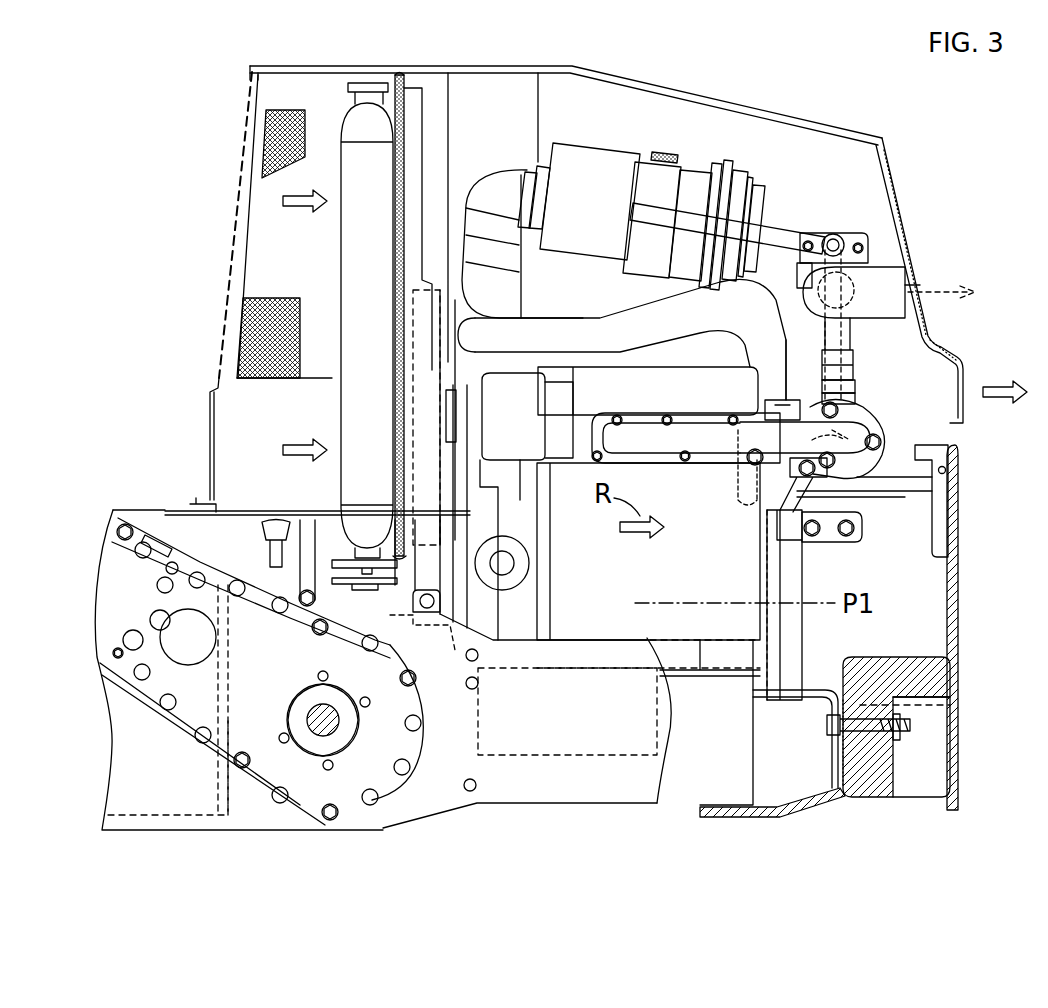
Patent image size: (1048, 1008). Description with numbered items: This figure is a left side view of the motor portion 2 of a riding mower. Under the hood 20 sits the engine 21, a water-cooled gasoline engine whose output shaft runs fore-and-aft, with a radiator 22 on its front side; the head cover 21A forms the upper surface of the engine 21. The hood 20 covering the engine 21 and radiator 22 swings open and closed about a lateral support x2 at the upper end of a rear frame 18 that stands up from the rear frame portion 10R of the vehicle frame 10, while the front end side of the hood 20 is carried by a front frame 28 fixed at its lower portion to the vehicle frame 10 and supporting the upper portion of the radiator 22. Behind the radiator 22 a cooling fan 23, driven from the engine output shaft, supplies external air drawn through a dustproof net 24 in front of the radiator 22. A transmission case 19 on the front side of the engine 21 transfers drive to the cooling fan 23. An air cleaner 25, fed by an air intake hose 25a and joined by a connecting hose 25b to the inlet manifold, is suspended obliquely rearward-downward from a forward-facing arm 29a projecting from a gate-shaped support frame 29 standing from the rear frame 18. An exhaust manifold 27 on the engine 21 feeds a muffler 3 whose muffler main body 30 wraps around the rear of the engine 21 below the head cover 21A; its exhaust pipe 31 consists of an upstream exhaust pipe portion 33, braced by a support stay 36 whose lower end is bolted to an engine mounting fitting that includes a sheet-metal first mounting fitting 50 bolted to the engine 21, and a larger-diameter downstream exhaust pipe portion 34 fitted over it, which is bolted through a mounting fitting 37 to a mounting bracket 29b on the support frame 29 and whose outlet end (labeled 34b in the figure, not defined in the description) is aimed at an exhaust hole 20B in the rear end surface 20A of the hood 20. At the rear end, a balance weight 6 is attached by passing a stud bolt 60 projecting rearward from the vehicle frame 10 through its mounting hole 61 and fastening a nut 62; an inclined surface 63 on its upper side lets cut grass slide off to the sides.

The motor portion 2 is at (803, 122).
The muffler 3 is at (877, 472).
The balance weight 6 is at (872, 797).
The vehicle frame 10 is at (604, 807).
The rear frame portion 10R is at (440, 796).
The rear frame 18 is at (960, 608).
The transmission case 19 is at (152, 815).
The hood 20 is at (700, 100).
The rear end surface 20A is at (895, 158).
The exhaust hole 20B is at (928, 332).
The engine 21 is at (740, 580).
The head cover 21A is at (603, 388).
The radiator 22 is at (348, 420).
The cooling fan 23 is at (458, 336).
The dustproof net 24 is at (230, 262).
The air cleaner 25 is at (588, 154).
The air intake hose 25a is at (580, 294).
The connecting hose 25b is at (648, 336).
The exhaust manifold 27 is at (710, 445).
The front frame 28 is at (406, 132).
The support frame 29 is at (828, 236).
The forward-facing arm 29a is at (670, 220).
The mounting bracket 29b is at (855, 234).
The muffler main body 30 is at (856, 482).
The exhaust pipe 31 is at (858, 364).
The upstream exhaust pipe portion 33 is at (858, 334).
The downstream exhaust pipe portion 34 is at (886, 268).
The housing outlet 34b is at (905, 290).
The support stay 36 is at (813, 360).
The mounting fitting 37 is at (803, 264).
The first mounting fitting 50 is at (773, 417).
The stud bolt 60 is at (913, 724).
The mounting hole 61 is at (828, 726).
The nut 62 is at (904, 740).
The inclined surface 63 is at (904, 656).
The lateral support x2 is at (952, 468).